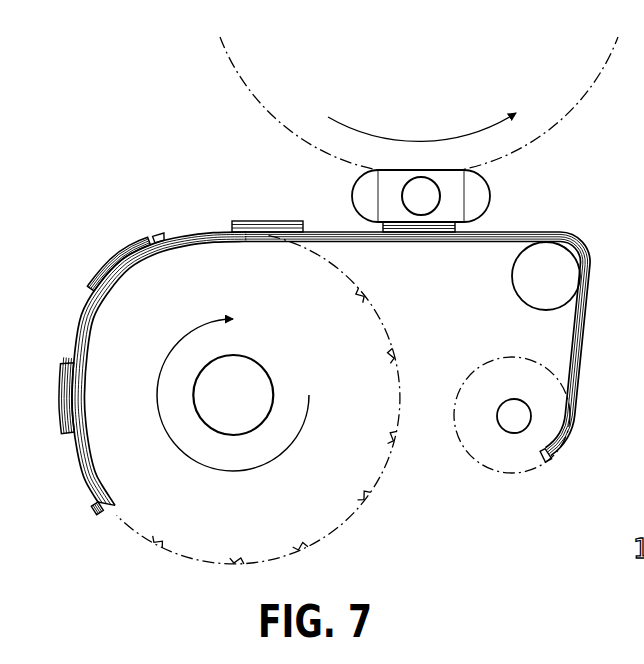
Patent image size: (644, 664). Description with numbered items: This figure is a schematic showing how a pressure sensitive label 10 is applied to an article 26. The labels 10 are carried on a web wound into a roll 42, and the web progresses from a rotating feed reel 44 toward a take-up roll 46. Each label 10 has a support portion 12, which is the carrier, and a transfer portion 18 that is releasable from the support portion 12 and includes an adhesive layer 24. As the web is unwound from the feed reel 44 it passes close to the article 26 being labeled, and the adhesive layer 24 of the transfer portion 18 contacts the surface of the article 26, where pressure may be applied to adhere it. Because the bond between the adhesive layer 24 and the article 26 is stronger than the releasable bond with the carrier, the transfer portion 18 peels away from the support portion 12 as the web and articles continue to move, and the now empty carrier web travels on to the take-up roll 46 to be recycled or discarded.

The pressure sensitive label 10 is at (114, 252).
The support portion 12 is at (546, 466).
The transfer portion 18 is at (163, 237).
The adhesive layer 24 is at (283, 222).
The article 26 is at (494, 196).
The roll 42 is at (70, 496).
The feed reel 44 is at (254, 372).
The take-up roll 46 is at (507, 490).